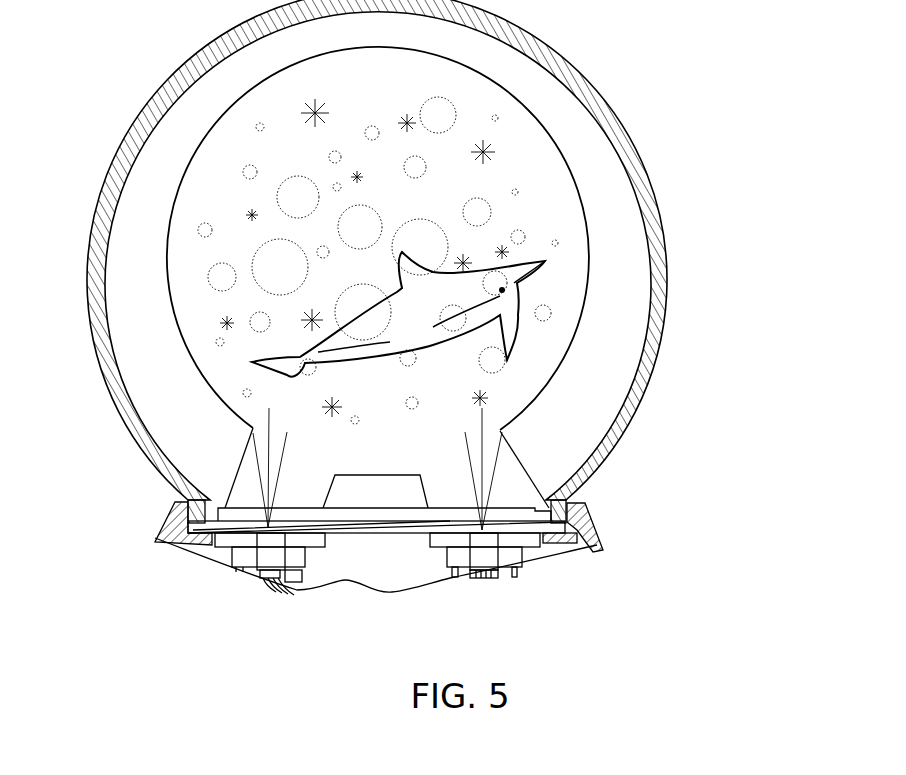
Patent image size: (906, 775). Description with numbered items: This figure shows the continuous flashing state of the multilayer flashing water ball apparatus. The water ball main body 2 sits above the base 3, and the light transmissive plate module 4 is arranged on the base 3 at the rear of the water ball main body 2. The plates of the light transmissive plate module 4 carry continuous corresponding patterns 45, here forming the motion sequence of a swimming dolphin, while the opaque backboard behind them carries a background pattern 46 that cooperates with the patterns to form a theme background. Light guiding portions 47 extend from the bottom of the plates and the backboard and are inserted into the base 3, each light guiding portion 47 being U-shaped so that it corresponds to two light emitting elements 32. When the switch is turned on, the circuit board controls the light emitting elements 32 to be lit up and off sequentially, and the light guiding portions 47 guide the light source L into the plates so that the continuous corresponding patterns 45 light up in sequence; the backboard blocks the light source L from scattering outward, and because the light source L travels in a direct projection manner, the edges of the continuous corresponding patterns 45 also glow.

The water ball main body 2 is at (114, 160).
The light transmissive plate module 4 is at (567, 153).
The background pattern 46 is at (526, 234).
The continuous corresponding patterns 45 is at (543, 264).
The light source L is at (482, 425).
The light guiding portion 47 is at (510, 482).
The base 3 is at (600, 542).
The light emitting element 32 is at (265, 558).